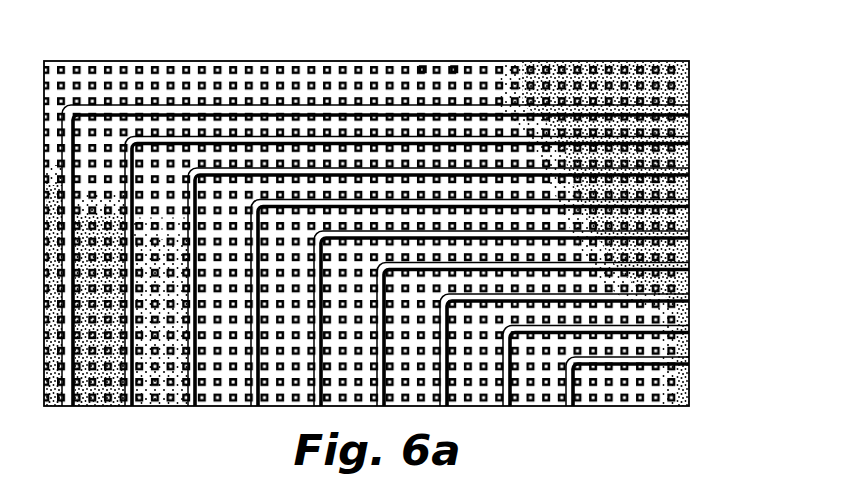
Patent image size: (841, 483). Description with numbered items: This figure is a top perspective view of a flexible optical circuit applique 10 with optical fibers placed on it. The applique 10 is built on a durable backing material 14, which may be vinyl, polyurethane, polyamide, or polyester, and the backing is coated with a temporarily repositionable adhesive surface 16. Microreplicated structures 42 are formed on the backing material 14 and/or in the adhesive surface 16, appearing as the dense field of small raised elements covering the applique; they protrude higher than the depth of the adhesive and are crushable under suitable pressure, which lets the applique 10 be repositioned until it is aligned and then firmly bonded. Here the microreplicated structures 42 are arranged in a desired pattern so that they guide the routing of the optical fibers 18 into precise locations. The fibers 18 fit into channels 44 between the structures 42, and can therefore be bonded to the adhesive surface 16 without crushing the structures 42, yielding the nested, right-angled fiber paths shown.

The flexible optical circuit applique 10 is at (397, 203).
The backing material 14 is at (206, 61).
The adhesive surface 16 is at (689, 191).
The optical fibers 18 is at (689, 140).
The microreplicated structures 42 is at (456, 72).
The channels 44 is at (352, 72).